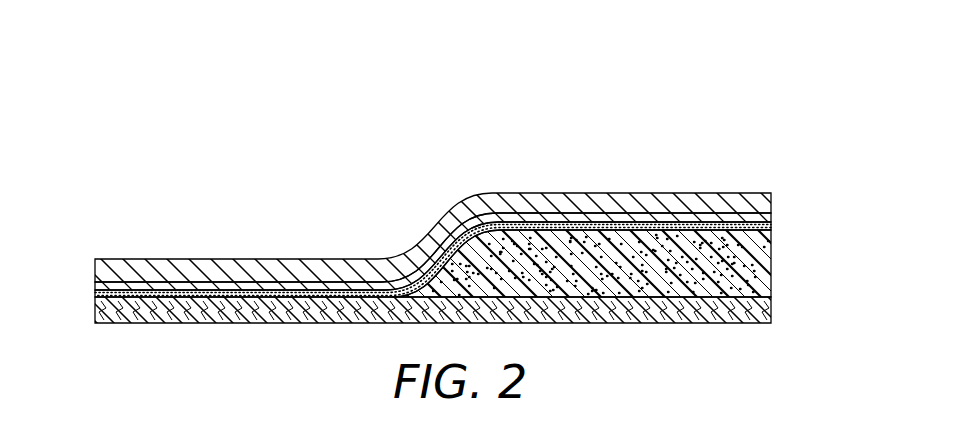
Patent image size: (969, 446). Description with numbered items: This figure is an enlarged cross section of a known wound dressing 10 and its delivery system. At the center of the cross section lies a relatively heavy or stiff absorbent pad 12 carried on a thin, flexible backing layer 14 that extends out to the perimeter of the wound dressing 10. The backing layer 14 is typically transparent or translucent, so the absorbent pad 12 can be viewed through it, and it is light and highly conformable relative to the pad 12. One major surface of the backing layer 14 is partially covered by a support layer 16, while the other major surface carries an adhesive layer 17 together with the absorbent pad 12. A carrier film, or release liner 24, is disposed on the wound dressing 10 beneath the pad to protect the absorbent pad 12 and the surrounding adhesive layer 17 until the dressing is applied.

The wound dressing 10 is at (341, 198).
The absorbent pad 12 is at (765, 272).
The backing layer 14 is at (537, 213).
The support layer 16 is at (605, 202).
The adhesive layer 17 is at (771, 223).
The release liner 24 is at (613, 313).